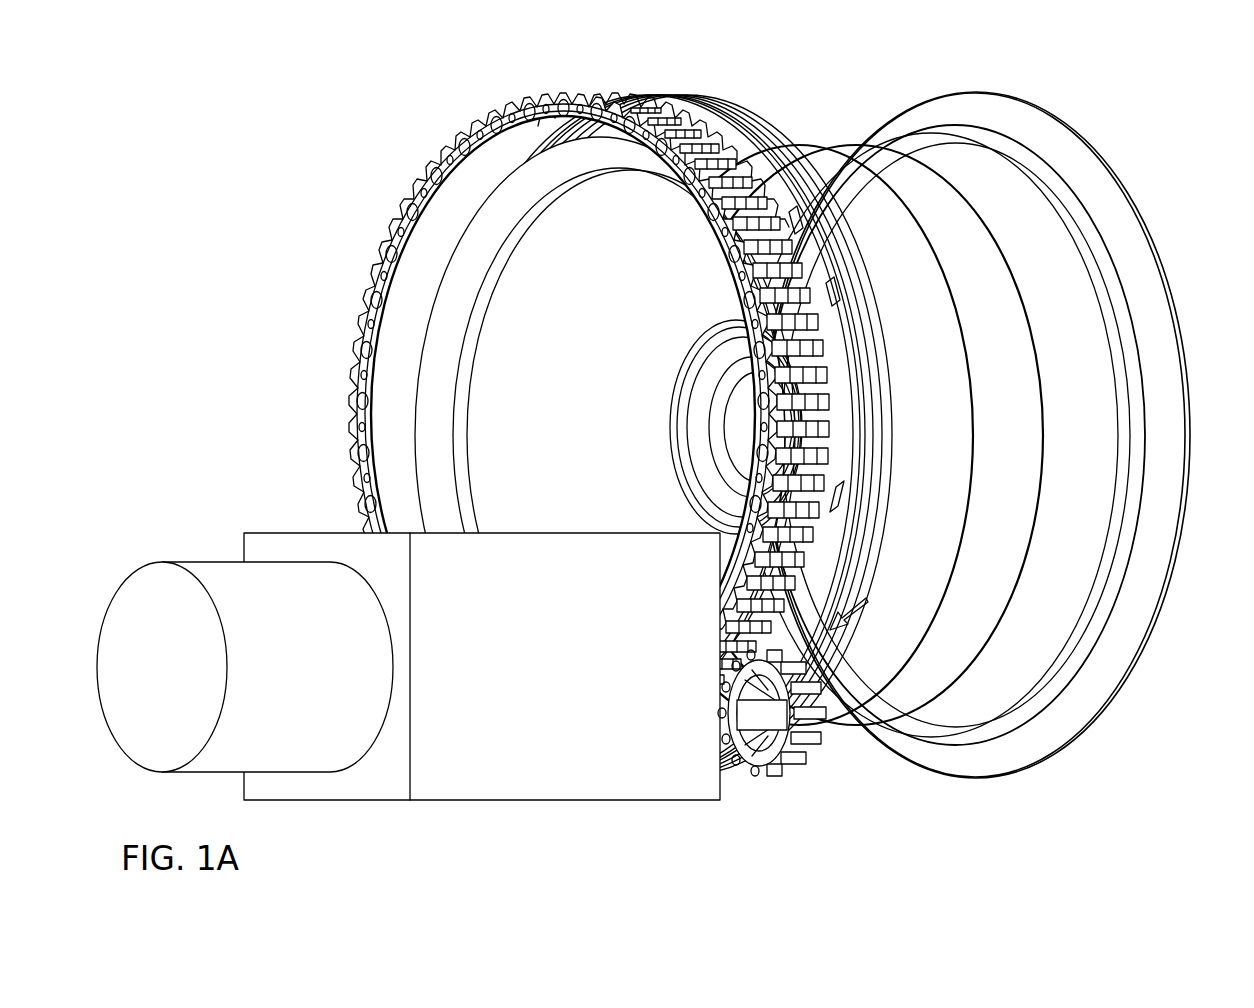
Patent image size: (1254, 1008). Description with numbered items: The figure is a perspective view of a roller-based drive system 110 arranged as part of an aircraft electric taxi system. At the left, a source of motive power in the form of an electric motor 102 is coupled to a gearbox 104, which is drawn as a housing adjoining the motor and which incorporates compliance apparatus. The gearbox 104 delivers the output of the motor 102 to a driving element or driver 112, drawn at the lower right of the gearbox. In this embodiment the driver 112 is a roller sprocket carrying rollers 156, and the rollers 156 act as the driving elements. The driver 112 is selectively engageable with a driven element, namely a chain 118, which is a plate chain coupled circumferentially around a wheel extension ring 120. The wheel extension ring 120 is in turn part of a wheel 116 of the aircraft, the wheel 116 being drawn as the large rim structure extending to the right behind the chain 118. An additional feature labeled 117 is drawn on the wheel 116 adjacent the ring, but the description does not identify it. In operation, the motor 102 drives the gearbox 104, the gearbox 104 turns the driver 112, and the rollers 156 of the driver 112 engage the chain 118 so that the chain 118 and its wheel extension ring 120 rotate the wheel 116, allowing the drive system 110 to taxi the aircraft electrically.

The electric motor 102 is at (186, 562).
The gearbox 104 is at (347, 800).
The roller-based drive system 110 is at (796, 632).
The driver 112 is at (775, 783).
The wheel 116 is at (1188, 360).
The wheel rim flange 117 is at (812, 256).
The chain 118 is at (678, 100).
The wheel extension ring 120 is at (840, 414).
The rollers 156 is at (822, 700).